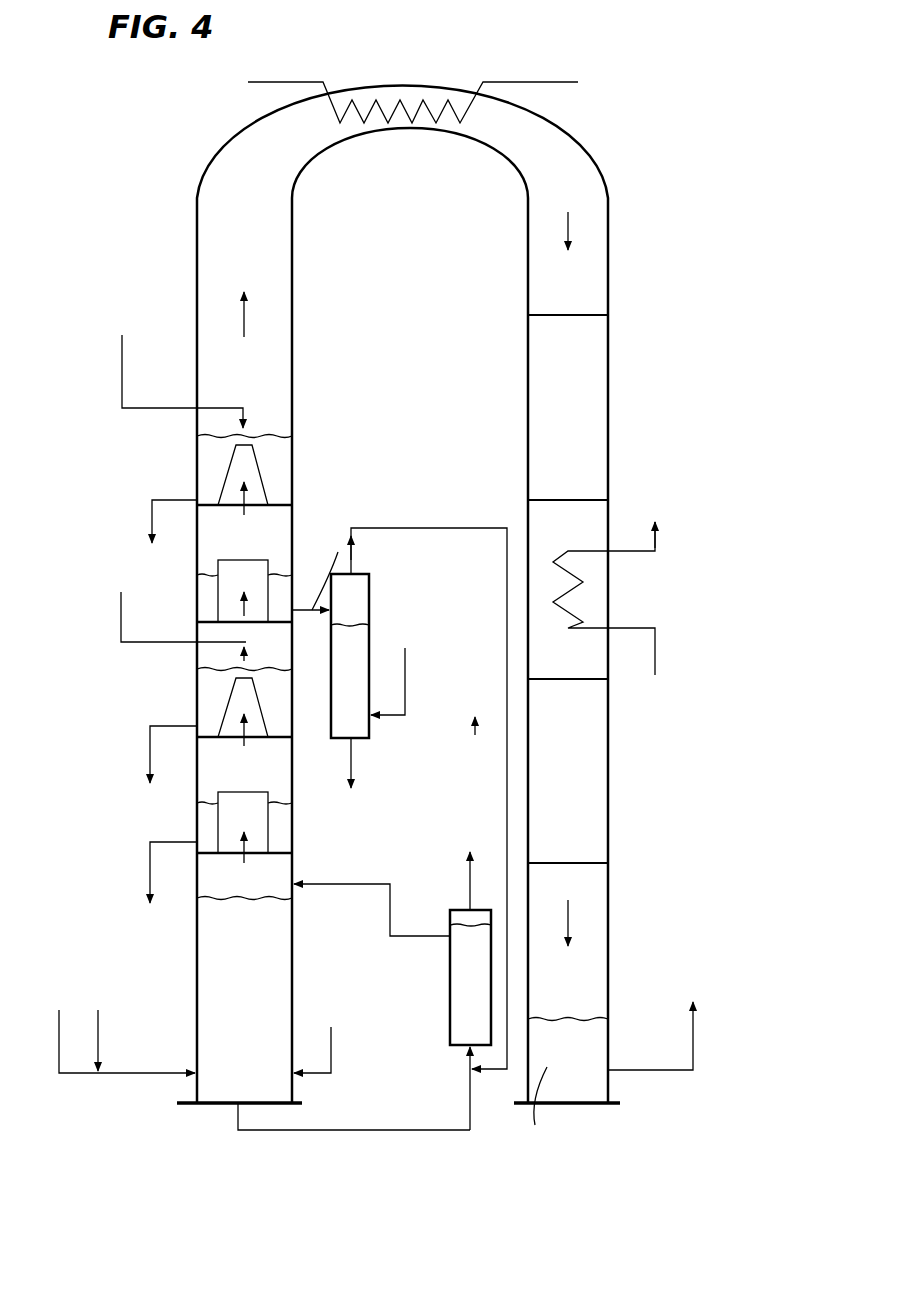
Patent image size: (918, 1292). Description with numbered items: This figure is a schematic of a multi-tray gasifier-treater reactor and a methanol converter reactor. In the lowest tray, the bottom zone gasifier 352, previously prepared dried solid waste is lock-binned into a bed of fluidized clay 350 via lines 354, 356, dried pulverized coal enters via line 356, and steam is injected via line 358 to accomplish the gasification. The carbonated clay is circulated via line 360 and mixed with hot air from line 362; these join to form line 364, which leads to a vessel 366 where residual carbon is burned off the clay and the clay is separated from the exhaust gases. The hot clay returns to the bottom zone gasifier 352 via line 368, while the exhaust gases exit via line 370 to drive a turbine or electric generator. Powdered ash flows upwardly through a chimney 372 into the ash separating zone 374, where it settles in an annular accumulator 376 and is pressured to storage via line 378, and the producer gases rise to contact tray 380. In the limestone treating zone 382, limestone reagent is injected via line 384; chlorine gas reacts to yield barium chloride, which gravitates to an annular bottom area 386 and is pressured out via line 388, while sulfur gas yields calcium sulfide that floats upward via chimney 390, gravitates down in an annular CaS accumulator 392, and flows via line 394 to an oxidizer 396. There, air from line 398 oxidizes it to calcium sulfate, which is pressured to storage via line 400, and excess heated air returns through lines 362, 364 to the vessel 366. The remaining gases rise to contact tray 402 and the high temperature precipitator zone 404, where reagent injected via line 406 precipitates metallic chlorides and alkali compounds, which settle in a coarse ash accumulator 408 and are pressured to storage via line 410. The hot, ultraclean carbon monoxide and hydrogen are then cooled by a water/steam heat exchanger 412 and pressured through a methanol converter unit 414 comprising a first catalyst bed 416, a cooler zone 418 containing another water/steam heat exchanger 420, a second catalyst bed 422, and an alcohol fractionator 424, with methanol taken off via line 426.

The bed of fluidized clay 350 is at (258, 1069).
The bottom zone gasifier 352 is at (292, 984).
The line 354 is at (88, 1075).
The line 356 is at (143, 1075).
The line 358 is at (331, 1052).
The line 360 is at (238, 1108).
The line 362 is at (351, 553).
The line 364 is at (470, 1068).
The vessel 366 is at (450, 968).
The line 368 is at (345, 887).
The line 370 is at (470, 895).
The chimney 372 is at (268, 821).
The ash separating zone 374 is at (316, 783).
The annular accumulator 376 is at (292, 850).
The line 378 is at (150, 880).
The contact tray 380 is at (257, 683).
The limestone treating zone 382 is at (195, 695).
The line 384 is at (121, 630).
The annular bottom area 386 is at (292, 712).
The line 388 is at (178, 728).
The chimney 390 is at (218, 592).
The annular CaS accumulator 392 is at (197, 617).
The line 394 is at (292, 616).
The oxidizer 396 is at (331, 651).
The line 398 is at (386, 716).
The line 400 is at (351, 752).
The contact tray 402 is at (268, 492).
The high temperature precipitator zone 404 is at (195, 470).
The line 406 is at (122, 372).
The coarse ash accumulator 408 is at (292, 468).
The line 410 is at (152, 526).
The water/steam heat exchanger 412 is at (380, 107).
The methanol converter unit 414 is at (620, 773).
The first catalyst bed 416 is at (608, 421).
The cooler zone 418 is at (608, 673).
The water/steam heat exchanger 420 is at (570, 568).
The second catalyst bed 422 is at (608, 847).
The alcohol fractionator 424 is at (608, 1078).
The line 426 is at (670, 1072).